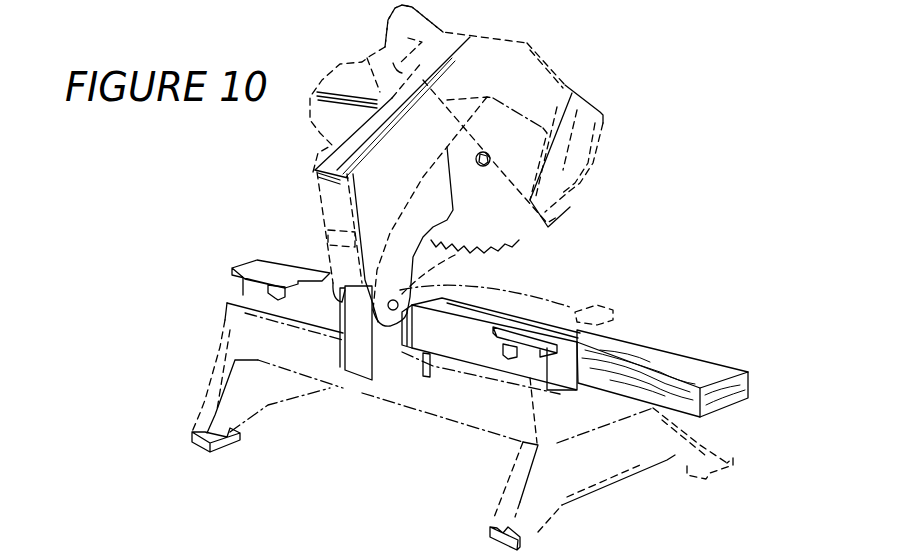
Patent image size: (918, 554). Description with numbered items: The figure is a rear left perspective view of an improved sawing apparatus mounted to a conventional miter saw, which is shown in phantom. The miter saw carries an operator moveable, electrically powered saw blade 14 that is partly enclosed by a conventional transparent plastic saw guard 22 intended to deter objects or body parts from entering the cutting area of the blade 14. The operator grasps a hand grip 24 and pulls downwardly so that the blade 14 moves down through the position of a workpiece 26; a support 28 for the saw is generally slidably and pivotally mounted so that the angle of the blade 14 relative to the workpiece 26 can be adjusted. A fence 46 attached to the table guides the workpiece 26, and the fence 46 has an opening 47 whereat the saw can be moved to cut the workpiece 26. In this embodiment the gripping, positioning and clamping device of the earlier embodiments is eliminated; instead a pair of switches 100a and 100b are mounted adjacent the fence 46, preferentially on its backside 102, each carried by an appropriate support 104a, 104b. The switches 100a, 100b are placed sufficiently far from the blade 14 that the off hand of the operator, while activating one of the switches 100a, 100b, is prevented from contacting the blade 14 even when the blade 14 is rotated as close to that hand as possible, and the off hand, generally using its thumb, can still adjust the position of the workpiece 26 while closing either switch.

The saw blade 14 is at (523, 240).
The saw guard 22 is at (614, 150).
The hand grip 24 is at (446, 15).
The workpiece 26 is at (685, 368).
The support 28 is at (317, 182).
The fence 46 is at (575, 343).
The opening 47 is at (393, 330).
The switch 100a is at (503, 354).
The switch 100b is at (272, 294).
The backside 102 is at (543, 348).
The support 104a is at (543, 352).
The support 104b is at (245, 281).